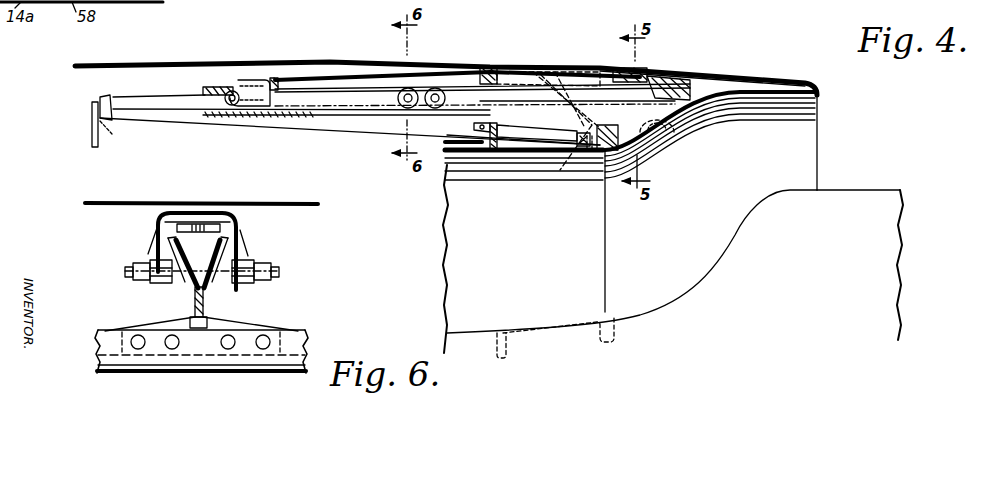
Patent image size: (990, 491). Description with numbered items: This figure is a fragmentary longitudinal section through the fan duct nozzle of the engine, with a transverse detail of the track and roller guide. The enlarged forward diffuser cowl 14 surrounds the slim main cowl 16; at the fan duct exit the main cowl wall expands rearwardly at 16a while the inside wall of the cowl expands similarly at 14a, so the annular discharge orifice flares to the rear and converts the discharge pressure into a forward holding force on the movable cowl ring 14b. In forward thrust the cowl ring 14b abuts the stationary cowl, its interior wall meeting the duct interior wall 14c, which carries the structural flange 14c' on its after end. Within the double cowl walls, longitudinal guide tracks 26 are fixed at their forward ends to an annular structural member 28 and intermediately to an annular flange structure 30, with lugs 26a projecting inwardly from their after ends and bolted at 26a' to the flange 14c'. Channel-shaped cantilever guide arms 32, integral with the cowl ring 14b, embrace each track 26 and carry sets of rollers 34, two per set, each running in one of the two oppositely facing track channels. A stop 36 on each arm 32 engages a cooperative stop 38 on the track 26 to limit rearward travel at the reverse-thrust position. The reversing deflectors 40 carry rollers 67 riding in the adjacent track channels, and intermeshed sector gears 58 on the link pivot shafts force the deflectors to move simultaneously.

In FIG. 4, the diffuser cowl 14 is at (313, 60).
In FIG. 6, the diffuser cowl 14 is at (199, 198).
In FIG. 4, the inside wall expansion of diffuser cowl 14a is at (718, 98).
In FIG. 4, the cowl ring 14b is at (690, 68).
In FIG. 4, the cowl ring interior wall 14c is at (502, 182).
In FIG. 6, the cowl ring interior wall 14c is at (201, 386).
In FIG. 4, the structural flange 14c' is at (620, 231).
In FIG. 4, the main cowl 16 is at (860, 189).
In FIG. 4, the expanded duct surface of main cowl 16a is at (766, 212).
In FIG. 4, the guide track 26 is at (578, 80).
In FIG. 6, the guide track 26 is at (215, 294).
In FIG. 4, the lug 26a is at (590, 173).
In FIG. 4, the bolt connection 26a' is at (557, 183).
In FIG. 4, the annular structural member 28 is at (100, 100).
In FIG. 4, the annular flange structure 30 is at (521, 160).
In FIG. 6, the annular flange structure 30 is at (290, 328).
In FIG. 4, the cantilever guide arm 32 is at (372, 76).
In FIG. 6, the cantilever guide arm 32 is at (239, 233).
In FIG. 4, the roller 34 is at (222, 110).
In FIG. 6, the roller 34 is at (187, 280).
In FIG. 4, the stop 36 is at (285, 80).
In FIG. 6, the stop 36 is at (177, 226).
In FIG. 4, the cooperative stop 38 is at (488, 66).
In FIG. 4, the reversing deflector 40 is at (559, 142).
In FIG. 4, the sector gear 58 is at (680, 128).
In FIG. 4, the roller 67 is at (428, 100).